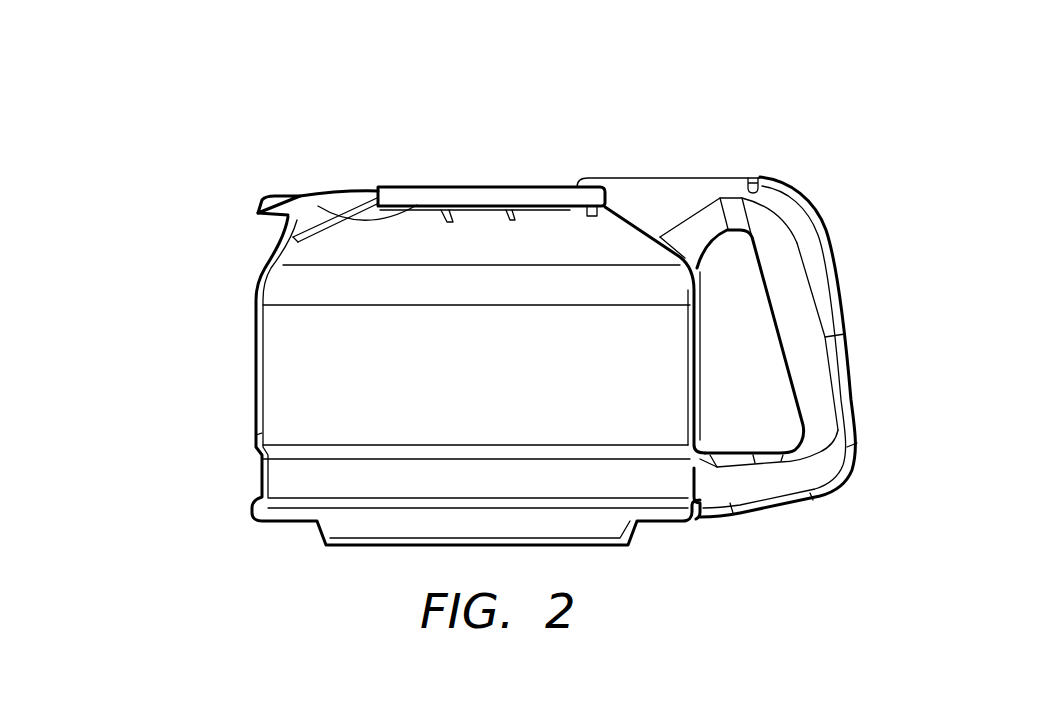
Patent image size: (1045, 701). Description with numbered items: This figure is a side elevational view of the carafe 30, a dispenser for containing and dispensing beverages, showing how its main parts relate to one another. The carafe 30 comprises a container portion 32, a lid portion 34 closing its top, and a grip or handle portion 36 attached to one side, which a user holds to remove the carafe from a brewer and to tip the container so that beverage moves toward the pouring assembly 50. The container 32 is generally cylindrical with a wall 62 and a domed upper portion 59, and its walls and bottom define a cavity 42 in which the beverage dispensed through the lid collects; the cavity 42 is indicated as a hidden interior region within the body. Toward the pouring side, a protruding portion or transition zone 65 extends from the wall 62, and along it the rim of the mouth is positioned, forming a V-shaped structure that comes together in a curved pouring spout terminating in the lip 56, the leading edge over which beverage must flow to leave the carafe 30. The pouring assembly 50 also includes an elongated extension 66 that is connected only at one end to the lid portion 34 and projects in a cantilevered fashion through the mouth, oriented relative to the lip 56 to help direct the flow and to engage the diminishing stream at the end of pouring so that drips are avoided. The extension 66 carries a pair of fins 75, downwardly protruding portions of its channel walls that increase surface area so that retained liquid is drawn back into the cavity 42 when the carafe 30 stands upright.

The carafe 30 is at (178, 109).
The container portion 32 is at (129, 400).
The lid portion 34 is at (473, 174).
The handle portion 36 is at (847, 347).
The cavity 42 is at (337, 410).
The pouring assembly 50 is at (227, 205).
The lip 56 is at (300, 211).
The domed upper portion 59 is at (621, 228).
The wall 62 is at (290, 367).
The transition zone 65 is at (309, 222).
The elongated extension 66 is at (266, 184).
The fins 75 is at (333, 226).